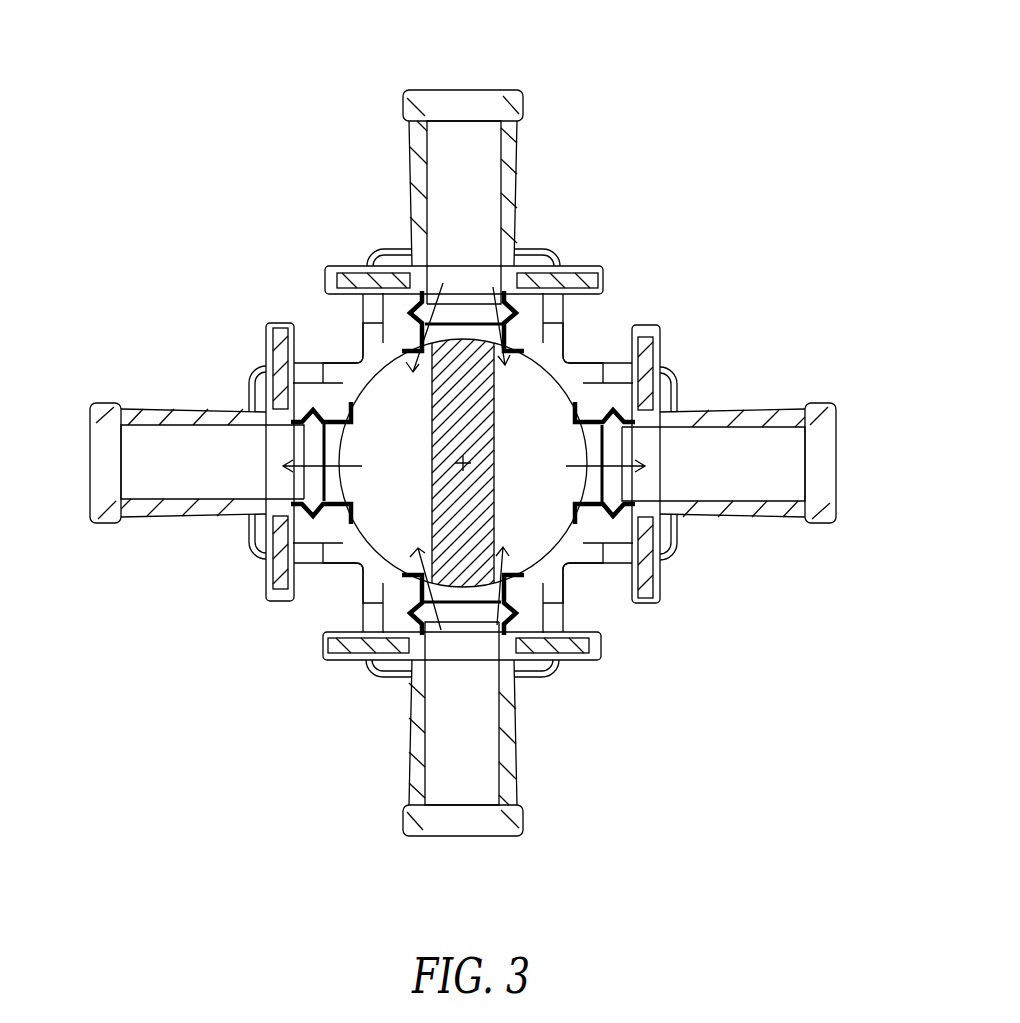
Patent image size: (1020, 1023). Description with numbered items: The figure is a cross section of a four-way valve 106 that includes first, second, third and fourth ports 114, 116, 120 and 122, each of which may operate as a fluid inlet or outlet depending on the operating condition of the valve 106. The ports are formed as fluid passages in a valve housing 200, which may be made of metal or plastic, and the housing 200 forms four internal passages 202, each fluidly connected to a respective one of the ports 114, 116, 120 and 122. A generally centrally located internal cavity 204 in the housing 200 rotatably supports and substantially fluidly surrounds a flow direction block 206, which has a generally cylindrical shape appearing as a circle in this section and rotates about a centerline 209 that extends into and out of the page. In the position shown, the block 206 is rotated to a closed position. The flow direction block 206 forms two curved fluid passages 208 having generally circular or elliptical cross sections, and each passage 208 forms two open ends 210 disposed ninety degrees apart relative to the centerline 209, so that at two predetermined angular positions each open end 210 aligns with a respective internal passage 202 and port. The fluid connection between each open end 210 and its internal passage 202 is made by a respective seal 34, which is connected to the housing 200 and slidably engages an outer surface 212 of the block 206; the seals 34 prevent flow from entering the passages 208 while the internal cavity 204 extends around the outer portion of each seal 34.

The 4-way valve 106 is at (681, 170).
The first port 114 is at (100, 458).
The second port 116 is at (465, 823).
The third port 120 is at (820, 457).
The fourth port 122 is at (460, 103).
The seal 34 is at (603, 575).
The valve housing 200 is at (548, 350).
The internal passage 202 is at (463, 463).
The internal cavity 204 is at (602, 530).
The flow direction block 206 is at (533, 535).
The curved fluid passage 208 is at (463, 468).
The centerline 209 is at (463, 463).
The open end 210 is at (388, 352).
The outer surface 212 is at (537, 562).